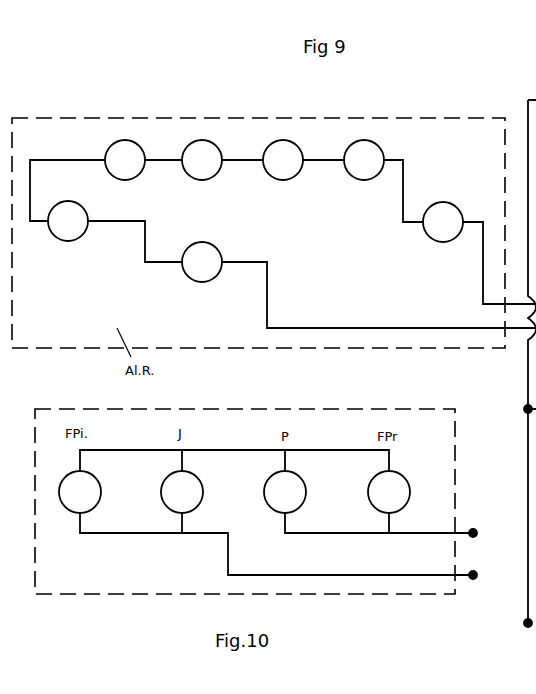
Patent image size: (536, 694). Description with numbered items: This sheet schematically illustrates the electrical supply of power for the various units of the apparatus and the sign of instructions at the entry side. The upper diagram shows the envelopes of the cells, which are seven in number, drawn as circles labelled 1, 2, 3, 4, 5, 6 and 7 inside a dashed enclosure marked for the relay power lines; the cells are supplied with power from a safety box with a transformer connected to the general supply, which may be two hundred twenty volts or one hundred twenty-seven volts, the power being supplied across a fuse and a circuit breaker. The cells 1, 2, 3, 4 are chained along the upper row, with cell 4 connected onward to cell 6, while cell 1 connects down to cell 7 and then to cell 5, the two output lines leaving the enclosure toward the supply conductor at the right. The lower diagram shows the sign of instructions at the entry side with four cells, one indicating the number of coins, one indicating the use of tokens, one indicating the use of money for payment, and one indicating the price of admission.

In FIG. 9, the station 1 is at (125, 160).
In FIG. 9, the station 2 / supply conductor 2 is at (202, 160).
In FIG. 10, the station 2 / supply conductor 2 is at (530, 523).
In FIG. 9, the station 3 is at (283, 160).
In FIG. 9, the station 4 is at (364, 160).
In FIG. 9, the station 5 is at (202, 262).
In FIG. 9, the station 6 is at (443, 222).
In FIG. 9, the station 7 is at (68, 221).